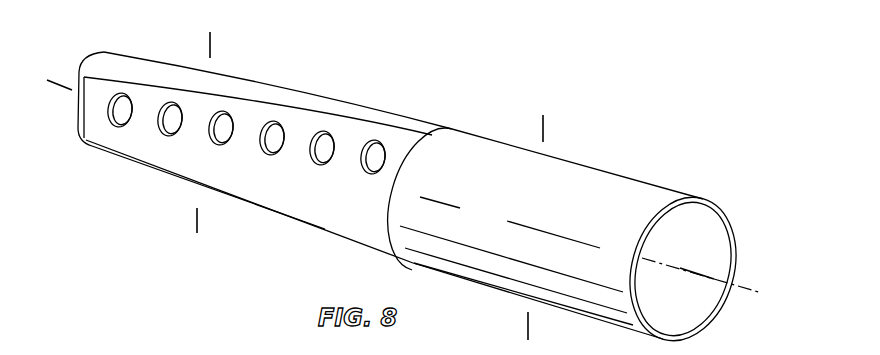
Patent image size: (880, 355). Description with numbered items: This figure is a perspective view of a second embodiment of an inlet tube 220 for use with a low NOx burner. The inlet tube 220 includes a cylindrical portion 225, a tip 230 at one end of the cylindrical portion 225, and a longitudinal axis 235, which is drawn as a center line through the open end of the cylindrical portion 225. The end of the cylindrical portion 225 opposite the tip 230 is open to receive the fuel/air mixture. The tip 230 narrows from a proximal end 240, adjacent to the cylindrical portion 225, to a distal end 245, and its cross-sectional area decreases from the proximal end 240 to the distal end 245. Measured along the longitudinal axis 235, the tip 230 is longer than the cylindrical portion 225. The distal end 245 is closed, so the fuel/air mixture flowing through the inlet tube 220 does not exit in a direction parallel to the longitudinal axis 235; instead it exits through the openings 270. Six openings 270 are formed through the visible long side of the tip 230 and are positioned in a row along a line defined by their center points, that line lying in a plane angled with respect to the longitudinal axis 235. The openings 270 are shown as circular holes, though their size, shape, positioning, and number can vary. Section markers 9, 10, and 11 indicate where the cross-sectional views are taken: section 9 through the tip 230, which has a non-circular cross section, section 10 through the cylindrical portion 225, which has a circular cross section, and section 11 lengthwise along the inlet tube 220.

The section line 9- 9 is at (214, 48).
The section line 10- 10 is at (548, 131).
The section line 11- 11 is at (61, 84).
The inlet tube 220 is at (713, 177).
The cylindrical portion 225 is at (612, 188).
The tip 230 is at (115, 68).
The longitudinal axis 235 is at (740, 289).
The proximal end 240 is at (440, 131).
The distal end 245 is at (76, 104).
The openings 270 is at (276, 133).